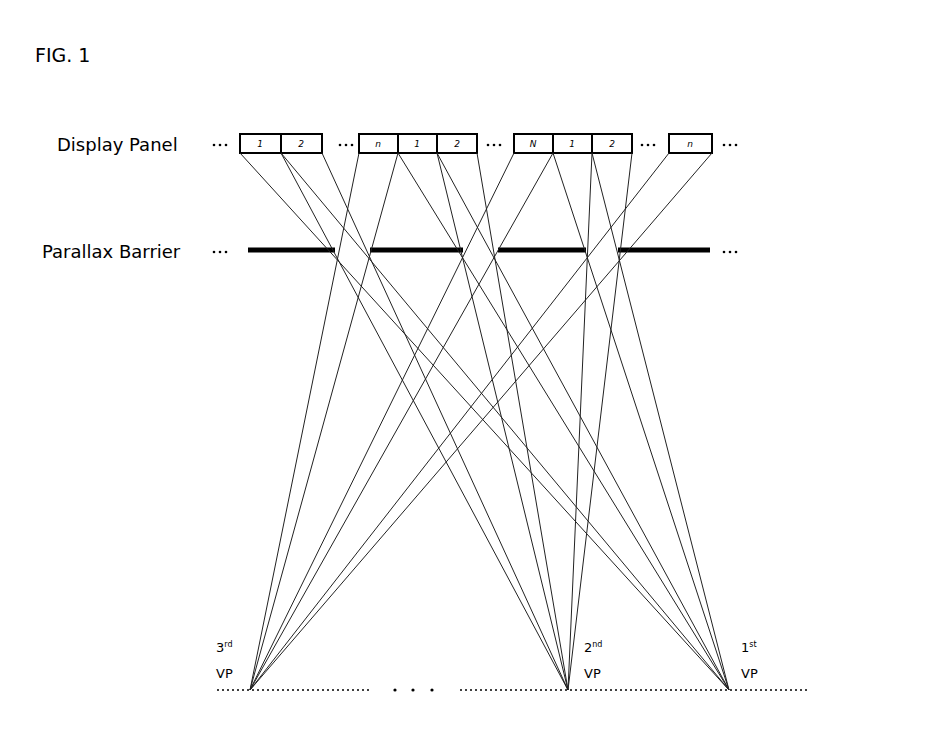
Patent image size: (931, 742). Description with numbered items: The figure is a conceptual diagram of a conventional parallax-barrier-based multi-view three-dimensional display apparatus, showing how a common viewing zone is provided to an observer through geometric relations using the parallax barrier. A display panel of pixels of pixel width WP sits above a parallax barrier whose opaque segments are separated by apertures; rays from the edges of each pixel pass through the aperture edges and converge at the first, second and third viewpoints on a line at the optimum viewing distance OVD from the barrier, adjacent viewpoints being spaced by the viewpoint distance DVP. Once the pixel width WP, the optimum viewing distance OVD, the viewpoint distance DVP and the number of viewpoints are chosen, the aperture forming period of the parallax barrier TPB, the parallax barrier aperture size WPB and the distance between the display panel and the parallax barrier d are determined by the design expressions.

The pixel width WP is at (497, 118).
The aperture forming period of the parallax barrier TPB is at (475, 266).
The parallax barrier aperture size WPB is at (558, 240).
The distance between the display panel and the parallax barrier d is at (760, 142).
The optimum viewing distance OVD is at (786, 690).
The viewpoint distance DVP is at (729, 692).